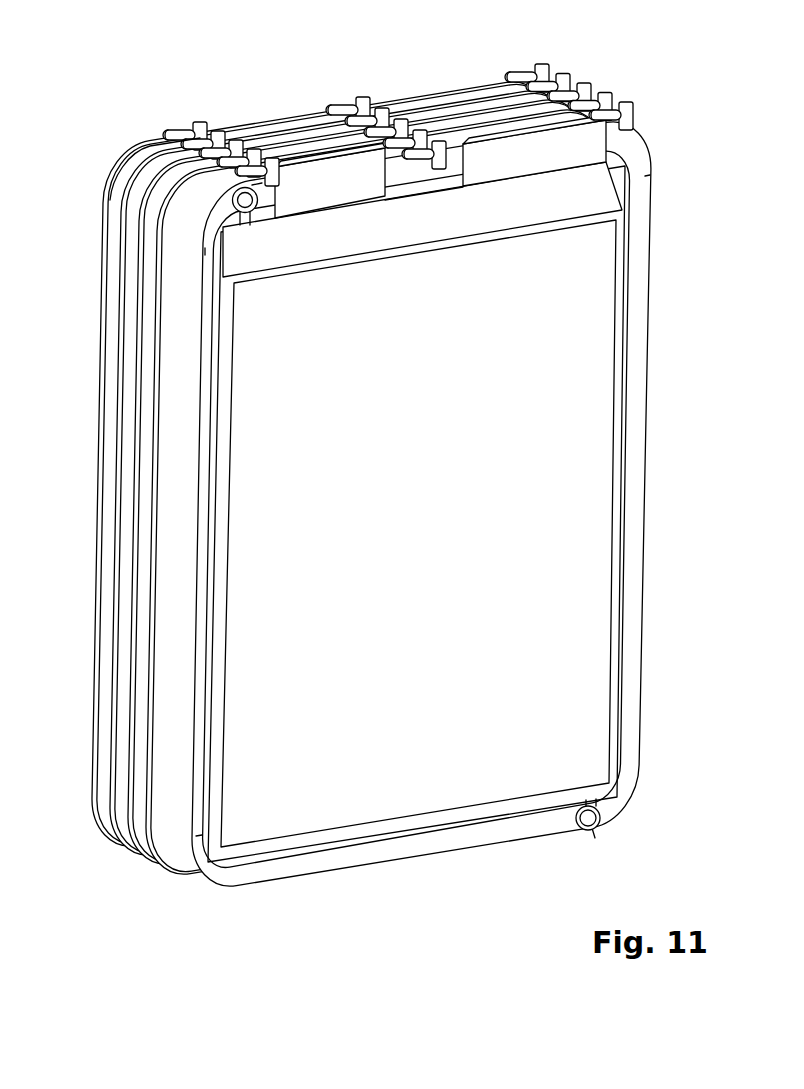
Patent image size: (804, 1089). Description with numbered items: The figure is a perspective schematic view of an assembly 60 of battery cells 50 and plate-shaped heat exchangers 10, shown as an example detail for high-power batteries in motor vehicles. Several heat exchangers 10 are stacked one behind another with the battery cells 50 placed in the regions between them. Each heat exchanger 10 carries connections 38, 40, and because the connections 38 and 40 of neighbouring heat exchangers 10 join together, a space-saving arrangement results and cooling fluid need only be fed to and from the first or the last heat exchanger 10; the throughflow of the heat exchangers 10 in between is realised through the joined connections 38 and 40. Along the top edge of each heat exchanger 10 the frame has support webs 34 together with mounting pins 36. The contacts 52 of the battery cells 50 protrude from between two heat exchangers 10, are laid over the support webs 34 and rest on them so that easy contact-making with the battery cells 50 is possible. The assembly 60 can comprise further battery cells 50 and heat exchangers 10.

The plate-shaped heat exchanger 10 is at (103, 840).
The support web 34 is at (371, 103).
The mounting pin 36 is at (162, 133).
The connection 38 is at (143, 148).
The connection 40 is at (256, 212).
The battery cell 50 is at (542, 503).
The contact 52 is at (333, 185).
The assembly 60 is at (486, 863).